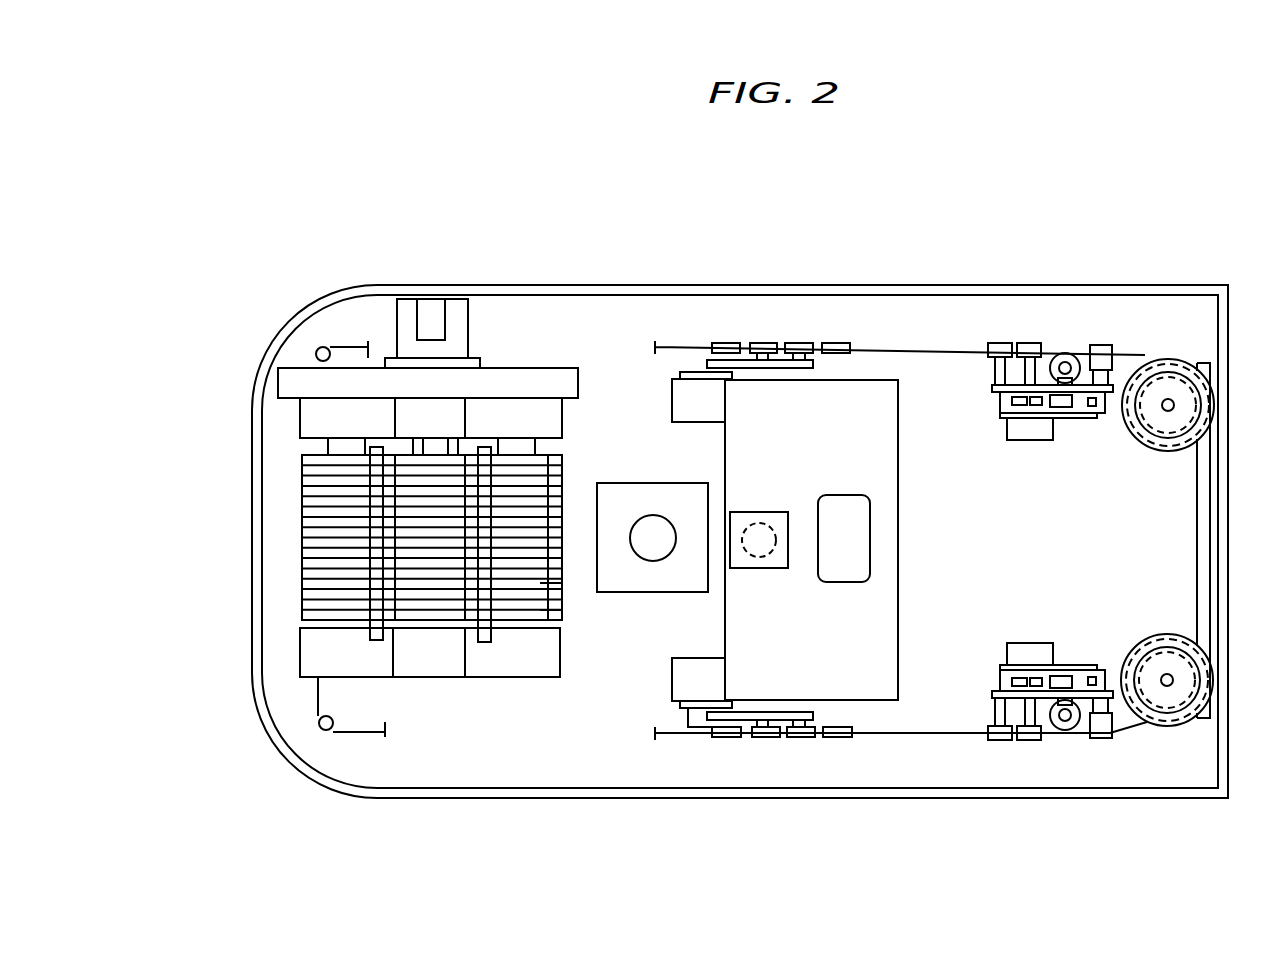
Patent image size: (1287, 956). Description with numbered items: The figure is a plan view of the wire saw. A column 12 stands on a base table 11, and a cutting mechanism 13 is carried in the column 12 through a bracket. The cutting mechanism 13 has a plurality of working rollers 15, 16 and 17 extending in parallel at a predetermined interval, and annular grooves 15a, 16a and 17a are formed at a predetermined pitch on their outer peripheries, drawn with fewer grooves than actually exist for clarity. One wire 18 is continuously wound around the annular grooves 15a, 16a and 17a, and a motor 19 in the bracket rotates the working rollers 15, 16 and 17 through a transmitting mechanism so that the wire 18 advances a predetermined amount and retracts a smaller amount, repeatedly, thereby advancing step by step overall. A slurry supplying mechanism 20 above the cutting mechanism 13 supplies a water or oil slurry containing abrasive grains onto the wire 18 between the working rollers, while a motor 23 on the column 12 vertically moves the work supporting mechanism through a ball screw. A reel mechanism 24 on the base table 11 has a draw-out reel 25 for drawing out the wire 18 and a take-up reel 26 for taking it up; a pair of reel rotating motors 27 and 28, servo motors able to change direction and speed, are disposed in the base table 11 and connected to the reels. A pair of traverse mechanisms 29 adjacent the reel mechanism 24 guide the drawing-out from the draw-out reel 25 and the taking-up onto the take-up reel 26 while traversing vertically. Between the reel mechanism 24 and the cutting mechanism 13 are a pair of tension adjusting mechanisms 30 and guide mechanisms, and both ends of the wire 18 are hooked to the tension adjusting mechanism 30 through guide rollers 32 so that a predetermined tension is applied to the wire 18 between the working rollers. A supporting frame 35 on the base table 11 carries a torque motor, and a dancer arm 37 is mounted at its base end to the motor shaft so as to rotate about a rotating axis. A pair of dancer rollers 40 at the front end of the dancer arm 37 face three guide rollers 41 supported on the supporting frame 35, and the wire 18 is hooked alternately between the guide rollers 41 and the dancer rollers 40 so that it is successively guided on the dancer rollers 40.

The base table 11 is at (462, 777).
The column 12 is at (652, 569).
The cutting mechanism 13 is at (411, 459).
The working roller 15 is at (367, 547).
The annular groove 15a is at (322, 588).
The working roller 16 is at (562, 555).
The annular groove 16a is at (562, 610).
The working roller 17 is at (432, 455).
The annular groove 17a is at (443, 595).
The wire 18 is at (350, 348).
The motor 19 is at (470, 328).
The slurry supplying mechanism 20 is at (372, 443).
The motor 23 is at (658, 516).
The reel mechanism 24 is at (1151, 340).
The draw-out reel 25 is at (1210, 397).
The take-up reel 26 is at (1210, 668).
The reel rotating motor 27 is at (1186, 432).
The reel rotating motor 28 is at (1190, 712).
The traverse mechanism 29 is at (1062, 336).
The tension adjusting mechanism 30 is at (765, 384).
The guide roller 32 is at (318, 728).
The supporting frame 35 is at (898, 485).
The dancer arm 37 is at (803, 368).
The dancer roller 40 is at (795, 343).
The guide roller 41 is at (718, 343).